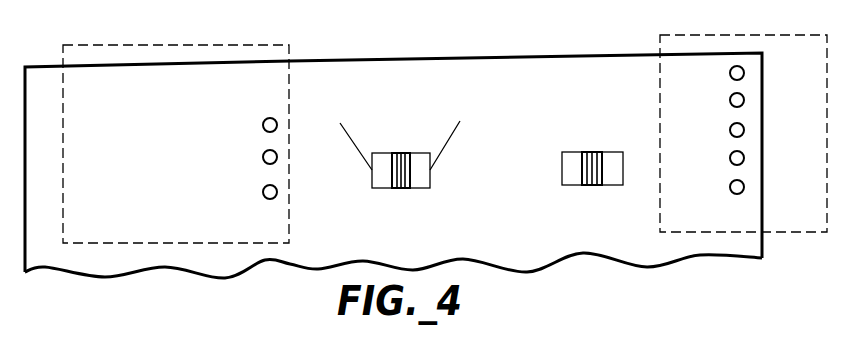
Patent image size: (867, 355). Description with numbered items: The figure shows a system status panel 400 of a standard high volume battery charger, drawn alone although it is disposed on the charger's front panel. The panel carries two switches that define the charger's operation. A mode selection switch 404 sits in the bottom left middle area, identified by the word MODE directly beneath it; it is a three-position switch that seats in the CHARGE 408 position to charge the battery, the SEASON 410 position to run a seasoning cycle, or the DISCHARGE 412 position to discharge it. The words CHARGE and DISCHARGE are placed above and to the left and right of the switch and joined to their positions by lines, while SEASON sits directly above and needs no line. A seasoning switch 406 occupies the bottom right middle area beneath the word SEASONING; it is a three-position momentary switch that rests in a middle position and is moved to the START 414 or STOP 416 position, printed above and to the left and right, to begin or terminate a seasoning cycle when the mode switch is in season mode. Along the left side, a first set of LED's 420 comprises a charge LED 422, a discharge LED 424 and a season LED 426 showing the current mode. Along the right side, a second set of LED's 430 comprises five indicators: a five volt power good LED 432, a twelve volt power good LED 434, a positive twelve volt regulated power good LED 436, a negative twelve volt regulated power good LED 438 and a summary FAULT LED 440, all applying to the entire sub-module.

The system status panel 400 is at (543, 43).
The mode selection switch 404 is at (408, 178).
The seasoning switch 406 is at (587, 165).
The CHARGE position 408 is at (358, 95).
The SEASON position 410 is at (398, 128).
The DISCHARGE position 412 is at (475, 95).
The START position 414 is at (640, 120).
The STOP position 416 is at (548, 122).
The first set of LED's 420 is at (197, 44).
The charge LED 422 is at (175, 122).
The discharge LED 424 is at (147, 157).
The season LED 426 is at (172, 192).
The second set of LED's 430 is at (716, 35).
The 5 V power good LED 432 is at (745, 73).
The 12 V power good LED 434 is at (745, 100).
The +12 VR power good LED 436 is at (745, 130).
The −12 VR power good LED 438 is at (745, 158).
The summary FAULT LED 440 is at (745, 187).